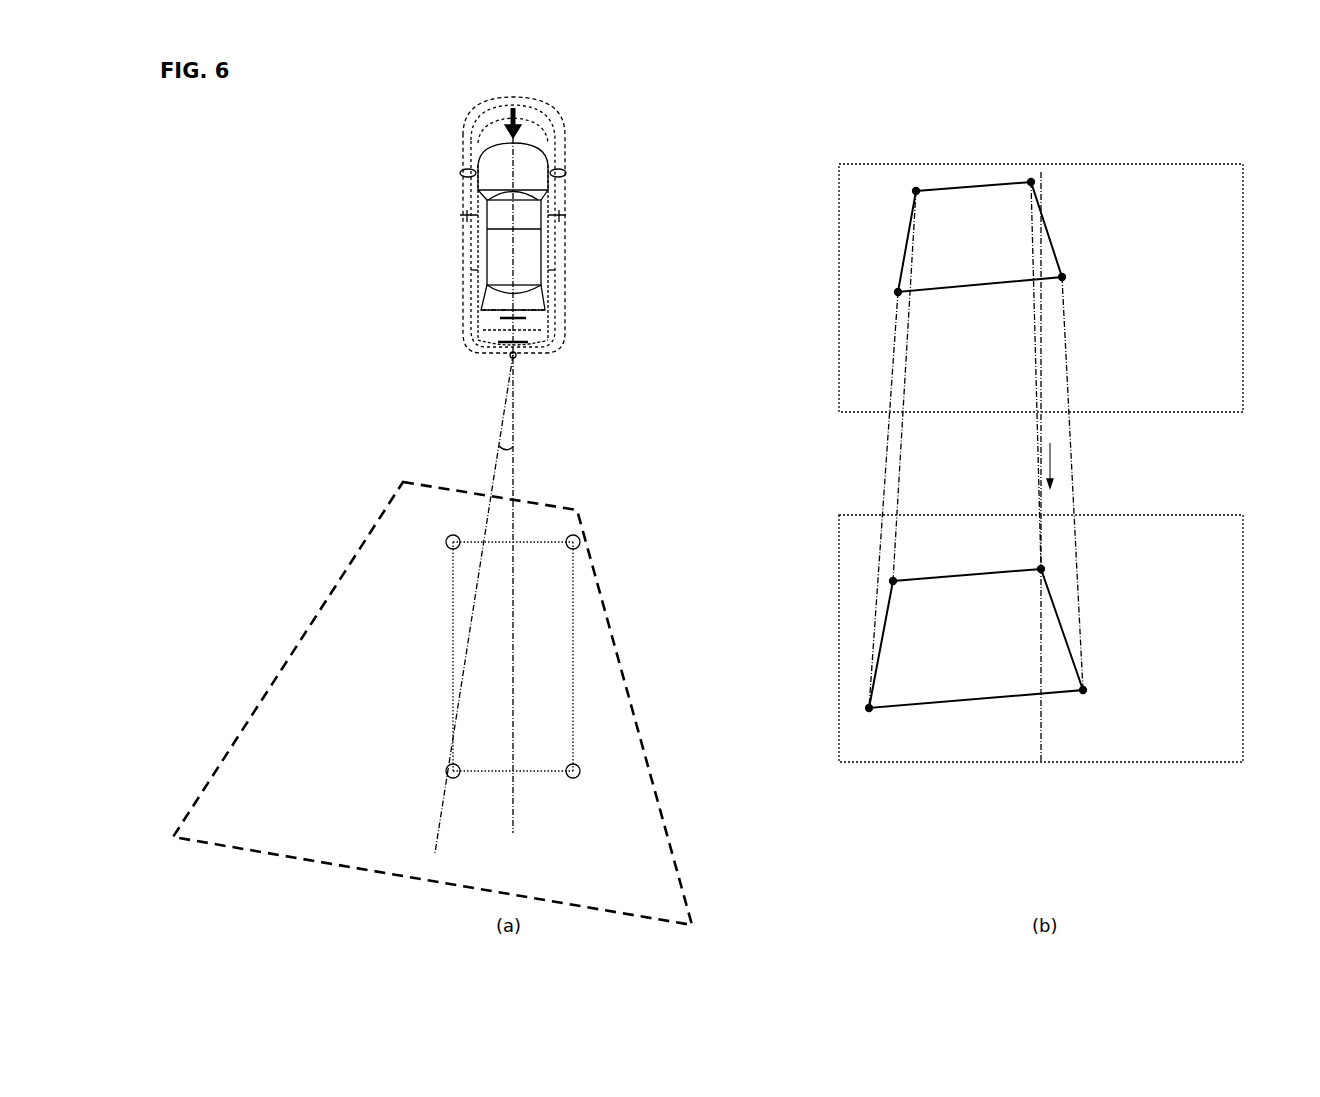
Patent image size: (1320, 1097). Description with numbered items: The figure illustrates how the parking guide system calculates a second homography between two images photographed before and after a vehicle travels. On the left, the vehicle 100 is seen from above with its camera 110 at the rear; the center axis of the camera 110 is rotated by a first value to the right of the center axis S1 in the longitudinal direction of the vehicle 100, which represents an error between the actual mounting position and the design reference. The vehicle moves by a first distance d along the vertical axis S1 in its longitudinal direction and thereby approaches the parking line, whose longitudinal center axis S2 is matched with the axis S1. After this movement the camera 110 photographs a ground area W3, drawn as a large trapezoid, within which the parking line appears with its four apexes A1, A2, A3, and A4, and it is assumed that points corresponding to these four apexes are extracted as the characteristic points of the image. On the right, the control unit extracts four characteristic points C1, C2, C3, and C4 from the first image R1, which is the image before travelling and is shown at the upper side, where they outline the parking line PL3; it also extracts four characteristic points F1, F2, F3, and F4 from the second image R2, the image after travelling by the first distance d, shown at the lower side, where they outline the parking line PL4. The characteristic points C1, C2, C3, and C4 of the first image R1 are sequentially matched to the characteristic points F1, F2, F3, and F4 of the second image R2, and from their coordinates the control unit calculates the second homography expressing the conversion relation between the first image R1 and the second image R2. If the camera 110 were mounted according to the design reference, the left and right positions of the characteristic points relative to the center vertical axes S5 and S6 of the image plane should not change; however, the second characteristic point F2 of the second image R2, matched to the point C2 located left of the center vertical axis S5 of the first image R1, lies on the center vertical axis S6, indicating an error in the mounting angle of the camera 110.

The vehicle 100 is at (464, 176).
The camera 110 is at (510, 357).
The first distance d is at (518, 123).
The center axis in the longitudinal direction of the vehicle S1 is at (517, 177).
The center axis in the longitudinal direction of the parking line S2 is at (513, 690).
The ground area W3 is at (297, 647).
The apex of the parking line A1 is at (580, 777).
The apex of the parking line A2 is at (446, 771).
The apex of the parking line A3 is at (580, 538).
The apex of the parking line A4 is at (446, 545).
The first image R1 is at (839, 297).
The second image R2 is at (839, 647).
The parking line PL3 is at (972, 289).
The parking line PL4 is at (970, 703).
The characteristic point C1 is at (902, 380).
The second characteristic point C2 is at (1044, 370).
The characteristic point C3 is at (885, 494).
The characteristic point C4 is at (1076, 478).
The characteristic point F1 is at (879, 580).
The second characteristic point F2 is at (1053, 568).
The characteristic point F3 is at (872, 720).
The characteristic point F4 is at (1095, 698).
The center vertical axis of the first image S5 is at (1041, 375).
The center vertical axis of the second image S6 is at (1043, 723).